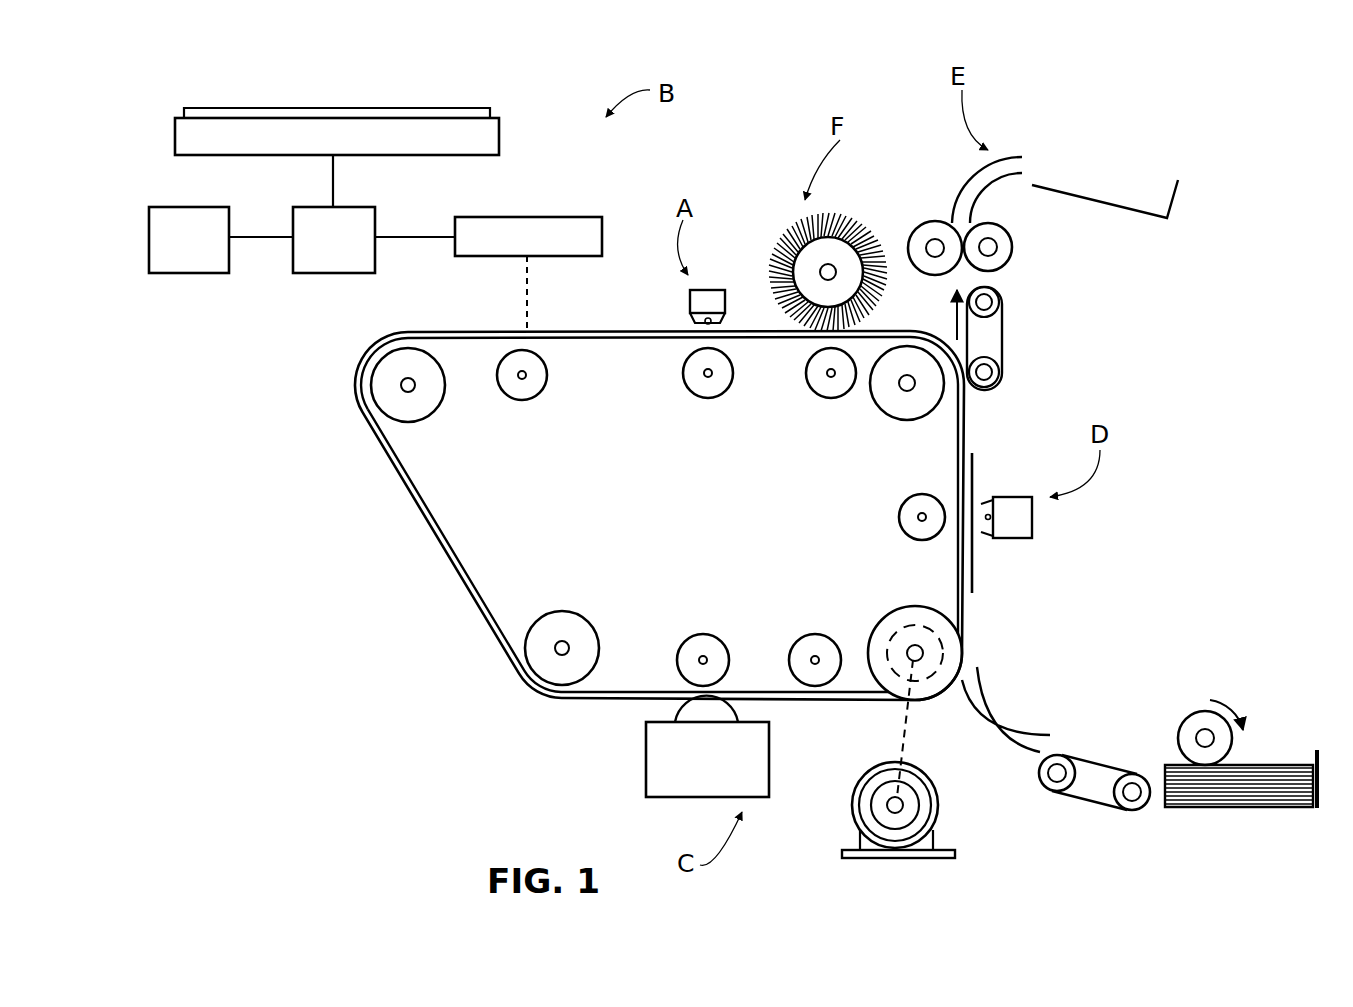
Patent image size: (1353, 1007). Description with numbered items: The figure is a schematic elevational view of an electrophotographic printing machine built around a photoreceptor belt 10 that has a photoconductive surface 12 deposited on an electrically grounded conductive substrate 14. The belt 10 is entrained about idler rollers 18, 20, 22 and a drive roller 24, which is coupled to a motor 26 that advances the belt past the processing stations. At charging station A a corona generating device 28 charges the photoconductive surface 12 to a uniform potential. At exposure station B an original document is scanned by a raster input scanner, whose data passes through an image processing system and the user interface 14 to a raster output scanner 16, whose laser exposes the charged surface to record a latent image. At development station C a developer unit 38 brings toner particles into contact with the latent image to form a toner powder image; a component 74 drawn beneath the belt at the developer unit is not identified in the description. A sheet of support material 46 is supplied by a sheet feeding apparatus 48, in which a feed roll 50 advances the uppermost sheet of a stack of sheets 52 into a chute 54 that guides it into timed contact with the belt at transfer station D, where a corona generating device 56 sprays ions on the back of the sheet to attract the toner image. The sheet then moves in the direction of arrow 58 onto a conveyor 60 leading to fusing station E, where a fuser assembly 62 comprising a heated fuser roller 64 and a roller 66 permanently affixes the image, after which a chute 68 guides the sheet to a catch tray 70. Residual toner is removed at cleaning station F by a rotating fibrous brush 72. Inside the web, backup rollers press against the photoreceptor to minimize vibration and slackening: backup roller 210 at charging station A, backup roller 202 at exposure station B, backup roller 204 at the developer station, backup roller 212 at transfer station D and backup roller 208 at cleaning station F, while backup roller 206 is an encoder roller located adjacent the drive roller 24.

The belt 10 is at (160, 120).
The photoconductive surface 12 is at (368, 196).
The conductive substrate 14 is at (208, 196).
The raster output scanner 16 is at (550, 198).
The idler roller 18 is at (908, 430).
The idler roller 20 is at (444, 420).
The idler roller 22 is at (608, 608).
The drive roller 24 is at (897, 602).
The motor 26 is at (945, 800).
The corona generating device 28 is at (716, 295).
The developer unit 38 is at (484, 112).
The sheet of support material 46 is at (972, 557).
The sheet feeding apparatus 48 is at (1270, 700).
The feed roll 50 is at (1180, 722).
The stack of sheets 52 is at (1288, 763).
The chute 54 is at (995, 712).
The corona generating device 56 is at (1050, 545).
The arrow 58 is at (953, 322).
The conveyor 60 is at (1002, 330).
The fuser assembly 62 is at (986, 198).
The heated fuser roller 64 is at (921, 237).
The roller 66 is at (1012, 246).
The chute 68 is at (1022, 157).
The catch tray 70 is at (1128, 216).
The fibrous brush 72 is at (843, 214).
The developer roller 74 is at (720, 705).
The backup roller 202 is at (540, 397).
The backup roller 204 is at (703, 634).
The encoder roller 206 is at (812, 634).
The backup roller 208 is at (822, 397).
The backup roller 210 is at (700, 397).
The backup roller 212 is at (897, 513).